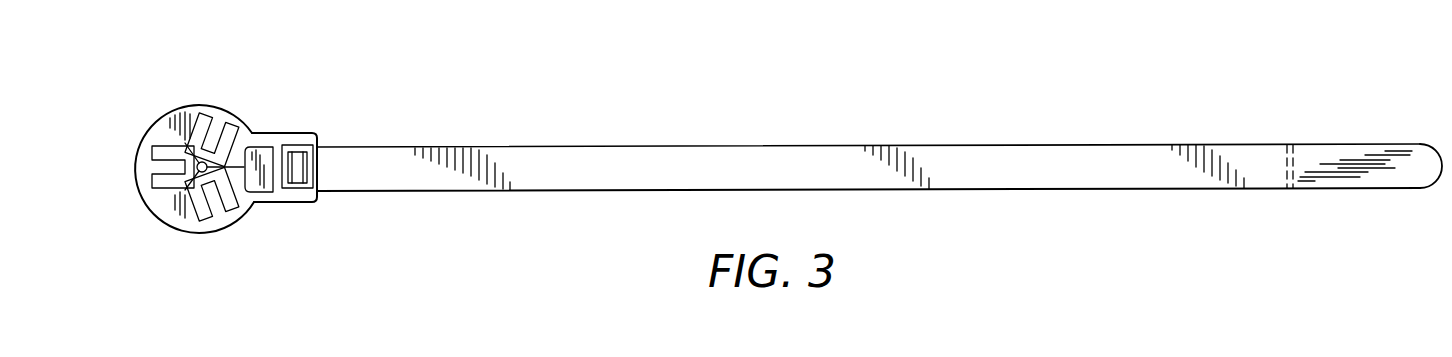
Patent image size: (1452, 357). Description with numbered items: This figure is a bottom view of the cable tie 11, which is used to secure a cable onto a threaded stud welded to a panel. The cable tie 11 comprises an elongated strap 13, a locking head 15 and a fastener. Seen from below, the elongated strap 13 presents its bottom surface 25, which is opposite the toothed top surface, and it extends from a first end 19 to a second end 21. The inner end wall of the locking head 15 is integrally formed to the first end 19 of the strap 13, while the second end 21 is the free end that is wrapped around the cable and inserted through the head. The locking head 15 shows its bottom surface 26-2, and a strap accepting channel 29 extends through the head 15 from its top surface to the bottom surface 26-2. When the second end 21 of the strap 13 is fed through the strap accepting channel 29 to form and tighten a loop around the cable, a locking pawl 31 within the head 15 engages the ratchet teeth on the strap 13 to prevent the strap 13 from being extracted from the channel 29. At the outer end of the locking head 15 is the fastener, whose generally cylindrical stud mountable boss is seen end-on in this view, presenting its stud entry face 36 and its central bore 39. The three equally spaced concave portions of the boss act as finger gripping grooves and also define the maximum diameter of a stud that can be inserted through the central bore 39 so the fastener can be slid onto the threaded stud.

The cable tie 11 is at (423, 211).
The elongated strap 13 is at (612, 170).
The locking head 15 is at (297, 208).
The first end 19 is at (327, 160).
The second end 21 is at (1396, 162).
The bottom surface 25 is at (1038, 168).
The bottom surface 26-2 is at (277, 147).
The strap accepting channel 29 is at (293, 188).
The locking pawl 31 is at (300, 153).
The stud entry face 36 is at (173, 207).
The central bore 39 is at (231, 150).